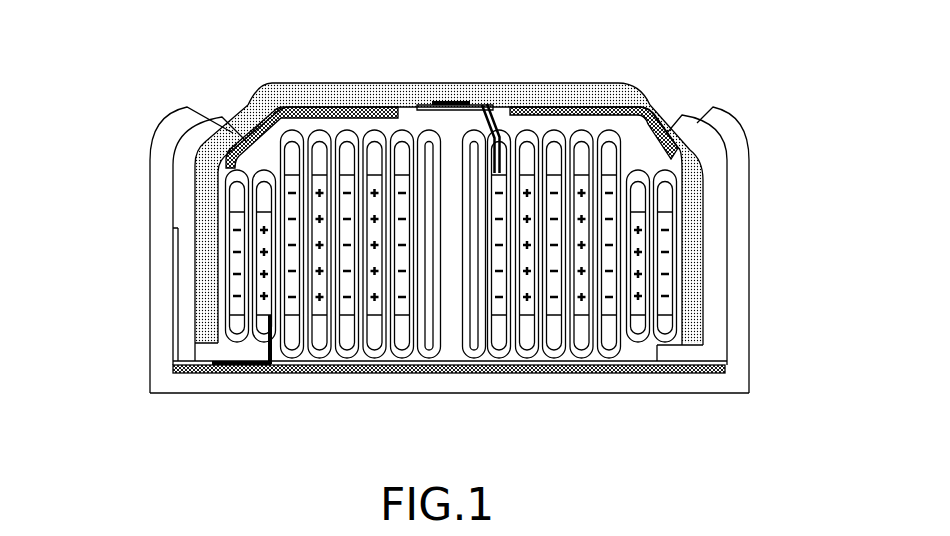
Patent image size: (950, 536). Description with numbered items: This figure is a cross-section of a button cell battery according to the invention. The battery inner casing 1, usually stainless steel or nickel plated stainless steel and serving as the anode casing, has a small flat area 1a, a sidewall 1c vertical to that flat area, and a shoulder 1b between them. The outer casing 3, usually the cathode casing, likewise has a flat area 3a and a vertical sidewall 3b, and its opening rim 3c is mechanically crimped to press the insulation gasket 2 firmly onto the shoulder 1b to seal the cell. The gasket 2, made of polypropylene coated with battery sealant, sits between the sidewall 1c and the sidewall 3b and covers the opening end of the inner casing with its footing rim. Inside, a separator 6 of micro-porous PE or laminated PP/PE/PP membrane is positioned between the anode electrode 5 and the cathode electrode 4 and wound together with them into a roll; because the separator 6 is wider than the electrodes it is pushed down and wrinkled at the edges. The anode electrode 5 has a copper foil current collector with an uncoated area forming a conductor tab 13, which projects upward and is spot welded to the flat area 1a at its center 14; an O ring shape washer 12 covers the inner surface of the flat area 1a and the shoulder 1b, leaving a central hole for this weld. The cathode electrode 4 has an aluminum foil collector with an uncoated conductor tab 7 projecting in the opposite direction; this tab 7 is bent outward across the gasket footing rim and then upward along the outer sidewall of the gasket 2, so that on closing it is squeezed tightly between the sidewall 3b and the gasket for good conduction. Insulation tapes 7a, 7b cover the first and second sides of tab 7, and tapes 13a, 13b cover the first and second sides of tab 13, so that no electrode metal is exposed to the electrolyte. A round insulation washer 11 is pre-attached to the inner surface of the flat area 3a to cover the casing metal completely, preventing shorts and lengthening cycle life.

The inner casing 1 is at (288, 100).
The flat area 1a is at (390, 97).
The shoulder 1b is at (218, 153).
The sidewall 1c is at (203, 268).
The insulation gasket 2 is at (185, 202).
The outer casing 3 is at (163, 225).
The flat area 3a is at (218, 382).
The sidewall 3b is at (165, 297).
The opening rim 3c is at (167, 148).
The cathode electrode 4 is at (633, 220).
The anode electrode 5 is at (660, 255).
The separator 6 is at (650, 290).
The conductor tab 7 is at (175, 333).
The insulation tape 7a is at (218, 360).
The insulation tape 7b is at (272, 360).
The insulation washer 11 is at (630, 370).
The O ring shape washer 12 is at (672, 160).
The conductor tab 13 is at (633, 113).
The insulation tape 13a is at (502, 142).
The insulation tape 13b is at (490, 119).
The spot welded connection 14 is at (458, 103).